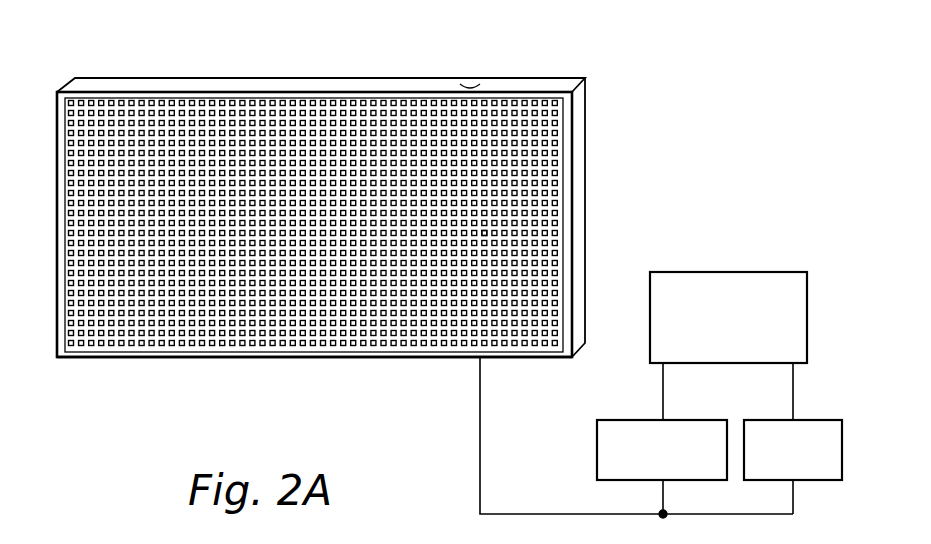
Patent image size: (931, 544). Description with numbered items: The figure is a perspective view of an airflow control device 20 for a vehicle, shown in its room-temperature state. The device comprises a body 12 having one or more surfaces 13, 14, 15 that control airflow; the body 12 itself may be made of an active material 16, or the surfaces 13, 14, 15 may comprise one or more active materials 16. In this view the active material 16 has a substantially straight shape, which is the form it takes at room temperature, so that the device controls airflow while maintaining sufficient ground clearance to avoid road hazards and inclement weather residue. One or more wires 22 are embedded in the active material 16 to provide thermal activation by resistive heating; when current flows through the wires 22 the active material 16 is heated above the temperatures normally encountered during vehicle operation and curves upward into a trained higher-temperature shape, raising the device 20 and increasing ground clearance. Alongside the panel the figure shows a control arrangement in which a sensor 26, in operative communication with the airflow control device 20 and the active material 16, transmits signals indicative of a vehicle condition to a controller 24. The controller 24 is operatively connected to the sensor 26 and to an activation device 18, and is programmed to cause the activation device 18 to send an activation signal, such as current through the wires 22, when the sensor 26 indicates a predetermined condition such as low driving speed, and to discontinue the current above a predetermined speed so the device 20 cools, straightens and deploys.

The body 12 is at (582, 174).
The surface 13 is at (138, 77).
The surface 14 is at (490, 238).
The surface 15 is at (470, 82).
The active material 16 is at (193, 356).
The activation device 18 is at (633, 419).
The airflow control device 20 is at (643, 112).
The wires 22 is at (310, 305).
The controller 24 is at (723, 272).
The sensor 26 is at (773, 419).